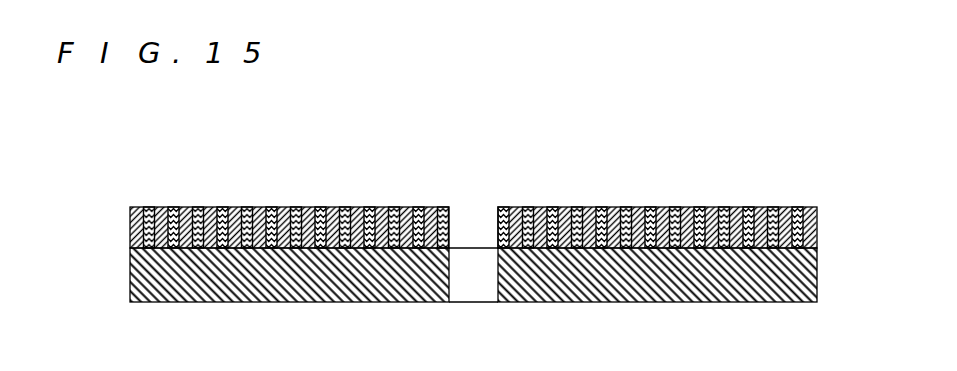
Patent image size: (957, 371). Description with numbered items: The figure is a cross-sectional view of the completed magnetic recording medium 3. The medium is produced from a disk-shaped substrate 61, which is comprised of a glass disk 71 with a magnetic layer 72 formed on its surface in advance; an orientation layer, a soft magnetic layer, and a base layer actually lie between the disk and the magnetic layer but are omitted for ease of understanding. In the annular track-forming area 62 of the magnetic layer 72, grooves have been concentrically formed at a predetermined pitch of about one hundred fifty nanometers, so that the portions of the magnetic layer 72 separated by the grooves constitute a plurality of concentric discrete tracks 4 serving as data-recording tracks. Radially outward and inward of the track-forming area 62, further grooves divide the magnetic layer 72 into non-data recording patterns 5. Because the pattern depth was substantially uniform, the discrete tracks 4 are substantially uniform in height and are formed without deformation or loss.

The magnetic recording medium 3 is at (477, 102).
The discrete tracks 4 is at (340, 207).
The non-data recording patterns 5 is at (174, 207).
The disk-shaped substrate 61 is at (830, 265).
The track-forming area 62 is at (410, 129).
The glass disk 71 is at (817, 292).
The magnetic layer 72 is at (817, 228).